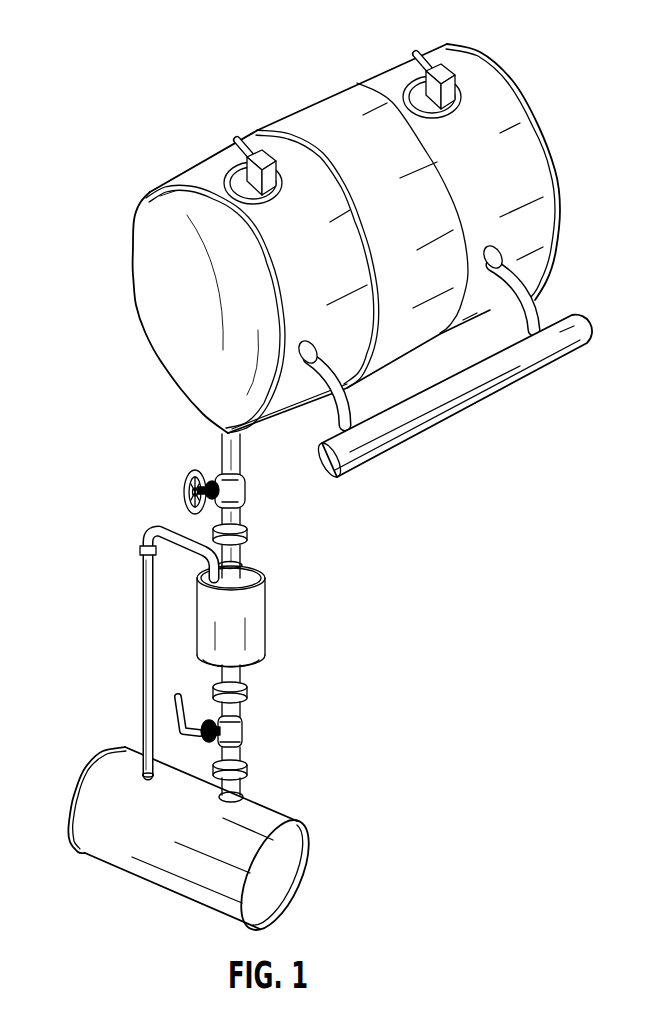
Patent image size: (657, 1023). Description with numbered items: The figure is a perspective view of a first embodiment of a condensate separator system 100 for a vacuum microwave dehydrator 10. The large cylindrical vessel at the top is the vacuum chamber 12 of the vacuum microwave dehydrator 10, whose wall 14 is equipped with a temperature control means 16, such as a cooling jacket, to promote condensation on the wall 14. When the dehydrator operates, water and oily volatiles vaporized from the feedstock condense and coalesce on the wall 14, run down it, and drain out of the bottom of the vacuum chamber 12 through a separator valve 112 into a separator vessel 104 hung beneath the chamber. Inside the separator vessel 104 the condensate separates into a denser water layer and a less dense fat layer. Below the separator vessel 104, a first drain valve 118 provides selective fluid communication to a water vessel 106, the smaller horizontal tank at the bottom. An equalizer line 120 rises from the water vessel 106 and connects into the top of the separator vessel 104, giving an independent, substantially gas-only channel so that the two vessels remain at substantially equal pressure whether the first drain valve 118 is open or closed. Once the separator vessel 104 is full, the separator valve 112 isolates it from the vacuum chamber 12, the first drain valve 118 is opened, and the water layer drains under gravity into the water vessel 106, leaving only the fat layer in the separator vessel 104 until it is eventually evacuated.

The vacuum microwave dehydrator 10 is at (109, 48).
The vacuum chamber 12 is at (133, 273).
The wall 14 is at (197, 167).
The temperature control means 16 is at (293, 111).
The condensate separator system 100 is at (107, 498).
The separator vessel 104 is at (266, 608).
The water vessel 106 is at (278, 812).
The separator valve 112 is at (248, 493).
The first drain valve 118 is at (243, 733).
The equalizer line 120 is at (142, 628).